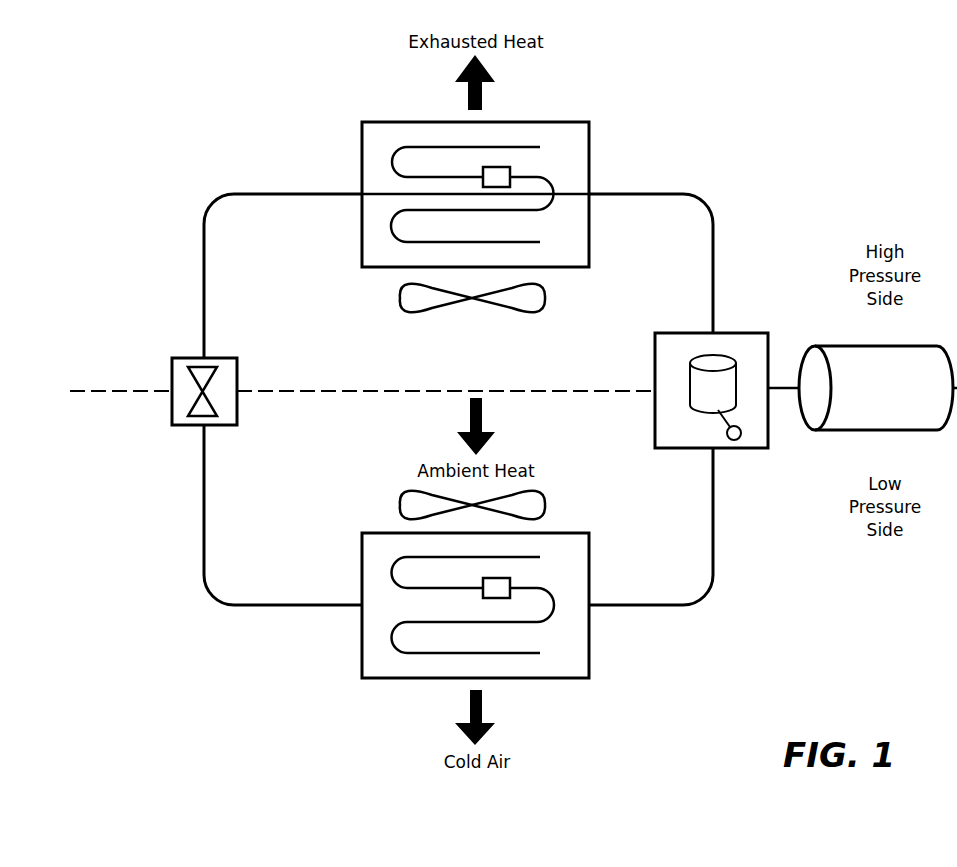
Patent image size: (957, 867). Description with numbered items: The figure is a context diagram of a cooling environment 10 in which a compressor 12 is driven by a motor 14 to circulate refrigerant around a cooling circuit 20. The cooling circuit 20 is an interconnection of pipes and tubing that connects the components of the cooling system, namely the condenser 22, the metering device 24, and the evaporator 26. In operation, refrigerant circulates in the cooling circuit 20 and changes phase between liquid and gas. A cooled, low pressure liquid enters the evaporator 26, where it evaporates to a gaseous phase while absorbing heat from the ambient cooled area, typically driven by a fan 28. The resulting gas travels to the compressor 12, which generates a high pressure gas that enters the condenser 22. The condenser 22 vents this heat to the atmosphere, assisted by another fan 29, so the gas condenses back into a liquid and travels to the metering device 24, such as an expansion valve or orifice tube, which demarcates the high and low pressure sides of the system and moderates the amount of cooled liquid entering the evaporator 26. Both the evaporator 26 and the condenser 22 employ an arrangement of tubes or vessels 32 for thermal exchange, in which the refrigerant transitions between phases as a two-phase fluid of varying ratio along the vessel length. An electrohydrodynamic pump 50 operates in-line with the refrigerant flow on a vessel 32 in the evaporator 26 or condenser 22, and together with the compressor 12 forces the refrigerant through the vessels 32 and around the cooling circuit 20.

The cooling environment 10 is at (310, 710).
The compressor 12 is at (762, 450).
The motor 14 is at (888, 396).
The cooling circuit 20 is at (695, 604).
The condenser 22 is at (362, 143).
The metering device 24 is at (172, 362).
The evaporator 26 is at (362, 633).
The fan 28 is at (400, 503).
The fan 29 is at (400, 297).
The vessels 32 is at (553, 188).
The electrohydrodynamic (EHD) pump 50 is at (510, 167).